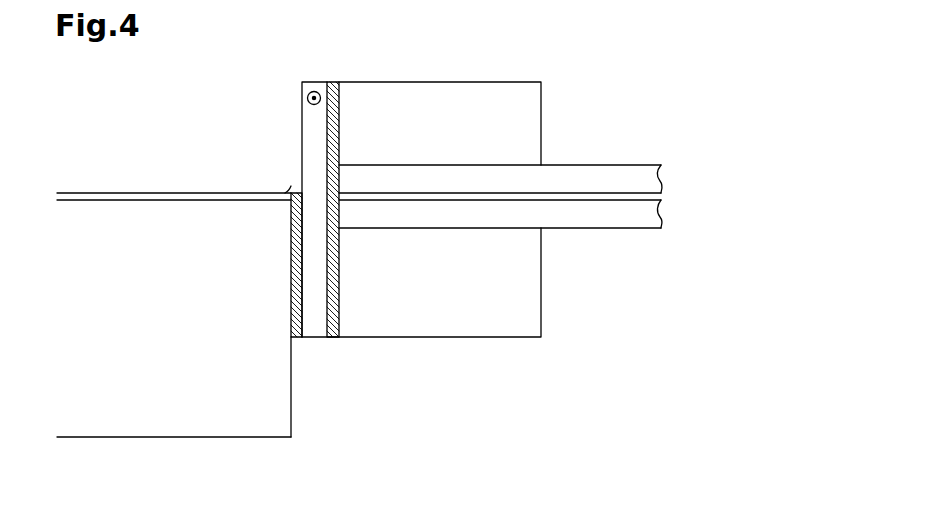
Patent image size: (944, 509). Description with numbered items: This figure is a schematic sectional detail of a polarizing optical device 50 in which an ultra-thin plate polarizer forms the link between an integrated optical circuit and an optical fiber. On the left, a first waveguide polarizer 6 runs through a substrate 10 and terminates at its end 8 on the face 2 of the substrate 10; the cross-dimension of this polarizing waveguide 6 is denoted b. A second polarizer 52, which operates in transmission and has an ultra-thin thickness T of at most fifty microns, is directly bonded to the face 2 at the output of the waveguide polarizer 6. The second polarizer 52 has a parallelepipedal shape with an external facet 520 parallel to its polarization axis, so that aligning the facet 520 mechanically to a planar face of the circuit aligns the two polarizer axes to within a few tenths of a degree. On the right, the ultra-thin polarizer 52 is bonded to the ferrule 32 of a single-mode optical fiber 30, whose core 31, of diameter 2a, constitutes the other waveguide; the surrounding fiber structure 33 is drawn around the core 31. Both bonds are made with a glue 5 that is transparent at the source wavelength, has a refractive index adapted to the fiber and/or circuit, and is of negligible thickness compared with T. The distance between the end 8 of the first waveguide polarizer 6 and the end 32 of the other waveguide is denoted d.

The face of the substrate 2 is at (292, 424).
The substrate 10 is at (188, 430).
The glue 5 is at (334, 82).
The first waveguide polarizer 6 is at (80, 193).
The end of the first waveguide polarizer 8 is at (291, 193).
The polarizing optical device 50 is at (192, 92).
The second polarizer 52 is at (312, 117).
The external facet 520 is at (317, 82).
The optical fiber 30 is at (627, 173).
The core of the optical fiber 31 is at (613, 198).
The end of the other waveguide / ferrule 32 is at (338, 198).
The profile box 33 is at (533, 97).
The diameter of the core 2a is at (468, 212).
The cross-dimension of the polarizing waveguide b is at (121, 228).
The distance between waveguide ends d is at (339, 303).
The thickness of the second polarizer T is at (302, 340).